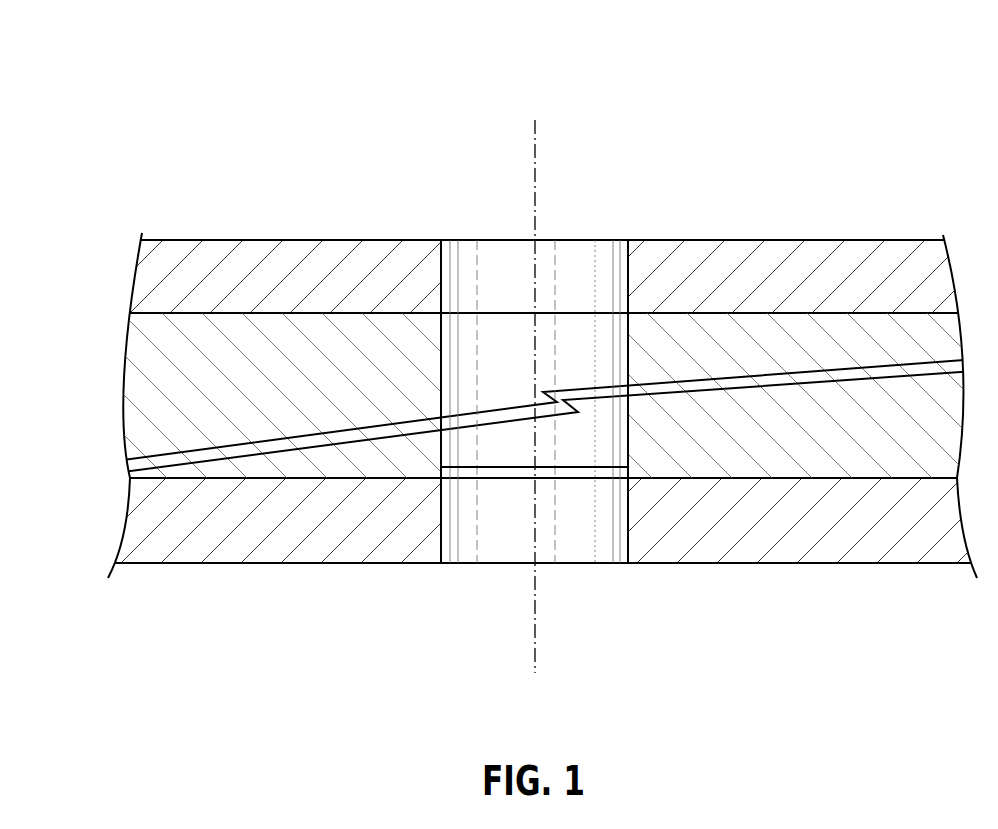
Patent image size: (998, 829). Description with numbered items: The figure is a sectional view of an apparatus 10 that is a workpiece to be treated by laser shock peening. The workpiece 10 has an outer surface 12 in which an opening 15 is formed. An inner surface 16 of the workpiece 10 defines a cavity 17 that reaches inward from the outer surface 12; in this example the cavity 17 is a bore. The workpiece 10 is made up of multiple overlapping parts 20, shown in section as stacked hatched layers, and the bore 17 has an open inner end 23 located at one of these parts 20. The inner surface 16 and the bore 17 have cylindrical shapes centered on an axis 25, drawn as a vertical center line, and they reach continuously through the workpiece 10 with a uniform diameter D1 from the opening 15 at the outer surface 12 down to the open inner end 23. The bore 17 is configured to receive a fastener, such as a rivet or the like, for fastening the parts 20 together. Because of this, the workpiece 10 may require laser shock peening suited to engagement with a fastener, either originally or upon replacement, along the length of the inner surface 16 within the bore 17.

The workpiece 10 is at (236, 113).
The outer surface 12 is at (345, 240).
The opening 15 is at (497, 241).
The inner surface 16 is at (628, 272).
The cavity 17 is at (521, 371).
The overlapping parts 20 is at (143, 343).
The open inner end 23 is at (495, 556).
The axis 25 is at (535, 132).
The diameter D1 is at (580, 462).